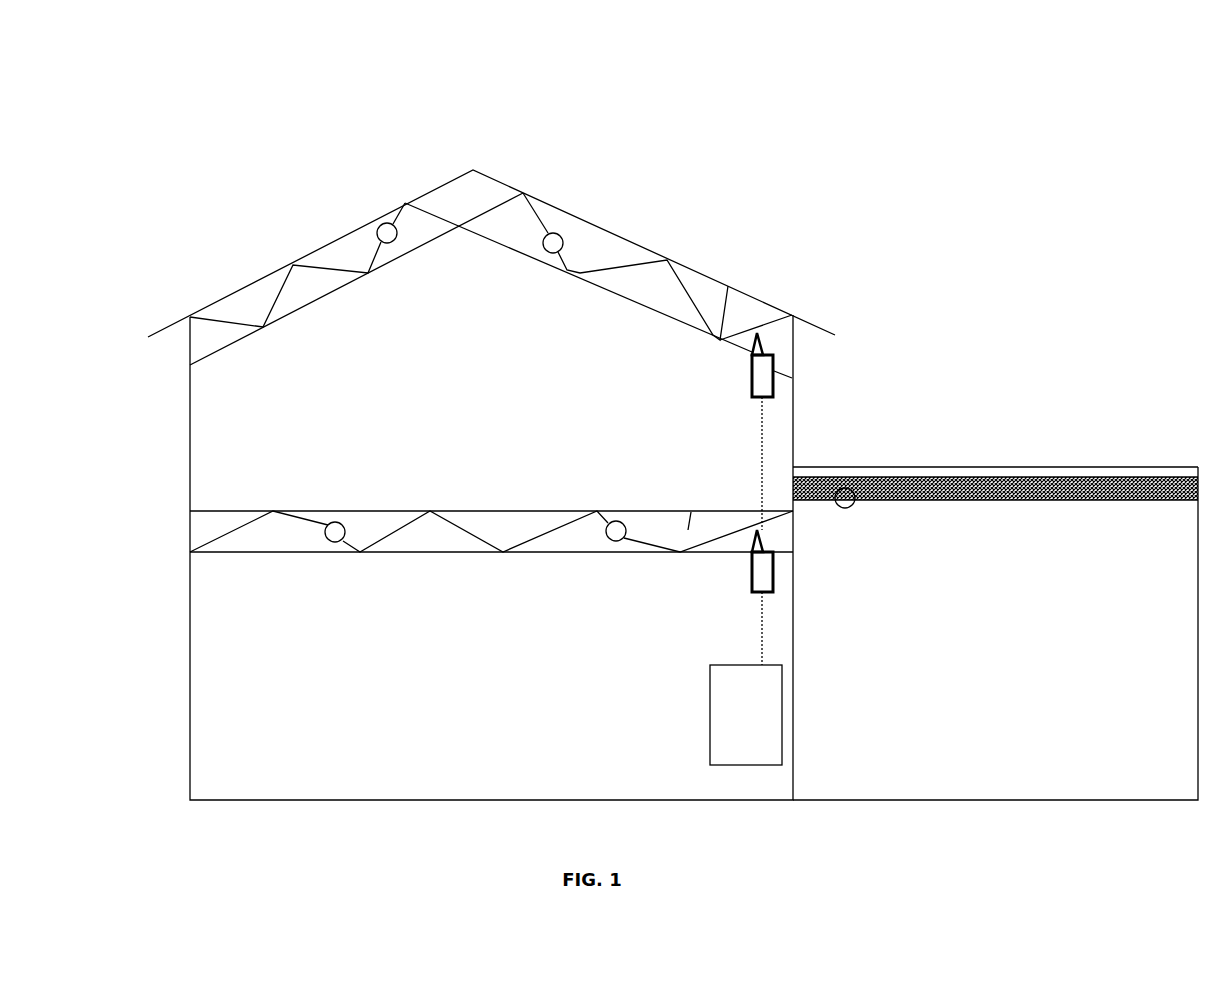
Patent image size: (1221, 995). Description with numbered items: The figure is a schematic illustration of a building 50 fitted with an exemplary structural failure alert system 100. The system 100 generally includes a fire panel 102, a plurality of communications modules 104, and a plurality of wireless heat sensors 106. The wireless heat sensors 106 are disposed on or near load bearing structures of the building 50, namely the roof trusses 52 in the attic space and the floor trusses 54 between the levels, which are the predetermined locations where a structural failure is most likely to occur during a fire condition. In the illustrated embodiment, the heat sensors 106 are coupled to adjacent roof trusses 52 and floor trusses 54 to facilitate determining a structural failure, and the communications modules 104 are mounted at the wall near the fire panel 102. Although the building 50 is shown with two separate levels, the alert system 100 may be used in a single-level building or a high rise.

The building 50 is at (405, 152).
The roof trusses 52 is at (357, 242).
The floor trusses 54 is at (297, 540).
The alert system 100 is at (663, 457).
The fire panel 102 is at (690, 706).
The communications modules 104 is at (774, 370).
The wireless heat sensors 106 is at (395, 227).